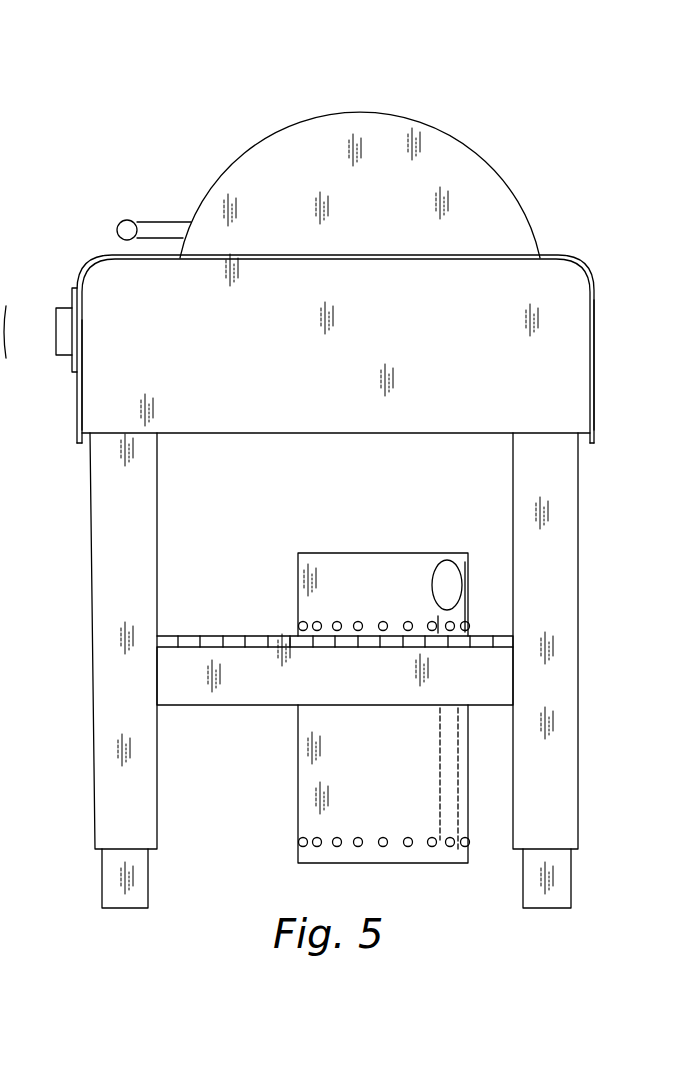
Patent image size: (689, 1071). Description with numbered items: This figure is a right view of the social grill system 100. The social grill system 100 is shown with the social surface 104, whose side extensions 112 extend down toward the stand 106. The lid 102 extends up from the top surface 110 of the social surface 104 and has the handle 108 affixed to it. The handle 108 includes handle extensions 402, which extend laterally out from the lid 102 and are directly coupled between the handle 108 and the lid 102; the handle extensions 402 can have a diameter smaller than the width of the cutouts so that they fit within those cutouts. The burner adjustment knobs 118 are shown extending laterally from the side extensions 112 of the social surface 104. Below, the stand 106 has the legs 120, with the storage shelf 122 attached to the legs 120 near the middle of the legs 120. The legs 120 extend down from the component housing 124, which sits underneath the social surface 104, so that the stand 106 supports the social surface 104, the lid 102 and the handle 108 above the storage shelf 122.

The social grill system 100 is at (582, 105).
The lid 102 is at (266, 146).
The social surface 104 is at (588, 252).
The stand 106 is at (603, 707).
The handle 108 is at (118, 222).
The top surface 110 is at (548, 256).
The side extensions 112 is at (594, 335).
The burner adjustment knobs 118 is at (6, 312).
The legs 120 is at (571, 808).
The storage shelf 122 is at (258, 690).
The component housing 124 is at (569, 380).
The handle extensions 402 is at (151, 222).